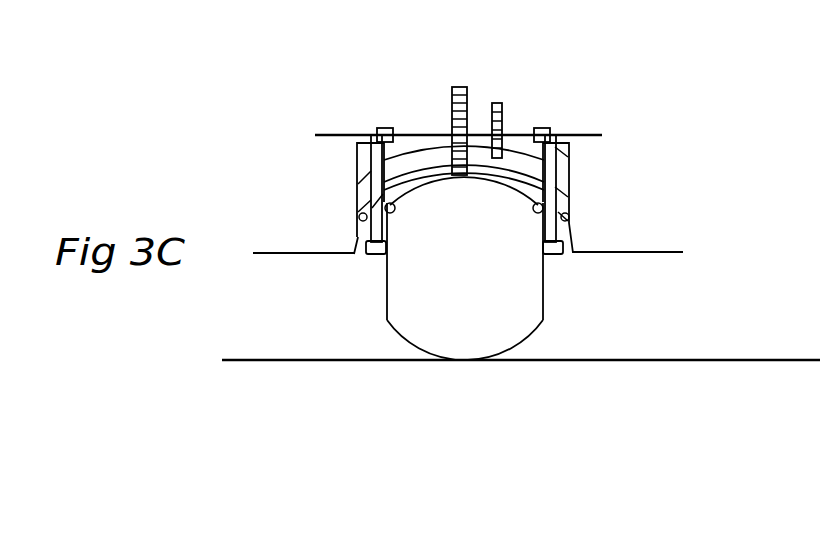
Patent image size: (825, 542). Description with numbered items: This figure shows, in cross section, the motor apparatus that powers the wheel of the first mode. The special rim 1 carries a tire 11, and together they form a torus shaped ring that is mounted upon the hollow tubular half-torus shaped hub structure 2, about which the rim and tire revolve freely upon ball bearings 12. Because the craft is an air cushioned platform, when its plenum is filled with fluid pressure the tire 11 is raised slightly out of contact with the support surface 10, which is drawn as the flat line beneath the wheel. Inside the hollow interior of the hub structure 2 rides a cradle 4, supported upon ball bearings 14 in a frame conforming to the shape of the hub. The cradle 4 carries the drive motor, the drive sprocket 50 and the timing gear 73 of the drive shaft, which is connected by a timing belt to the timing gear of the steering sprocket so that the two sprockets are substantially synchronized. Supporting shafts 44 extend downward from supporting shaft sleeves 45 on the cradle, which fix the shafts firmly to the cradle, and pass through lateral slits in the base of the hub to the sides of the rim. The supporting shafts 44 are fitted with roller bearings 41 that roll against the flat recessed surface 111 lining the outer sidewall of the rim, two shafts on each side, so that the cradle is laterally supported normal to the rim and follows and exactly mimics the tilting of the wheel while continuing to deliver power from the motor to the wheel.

The rim 1 is at (456, 182).
The hub structure 2 is at (673, 251).
The cradle 4 is at (355, 162).
The support surface 10 is at (678, 358).
The tire 11 is at (480, 350).
The ball bearings 12 is at (397, 214).
The ball bearings 14 is at (358, 213).
The roller bearings 41 is at (362, 258).
The supporting shafts 44 is at (356, 230).
The supporting shaft sleeves 45 is at (357, 153).
The drive sprocket 50 is at (450, 95).
The timing gear 73 is at (501, 97).
The flat recessed surface 111 is at (546, 297).